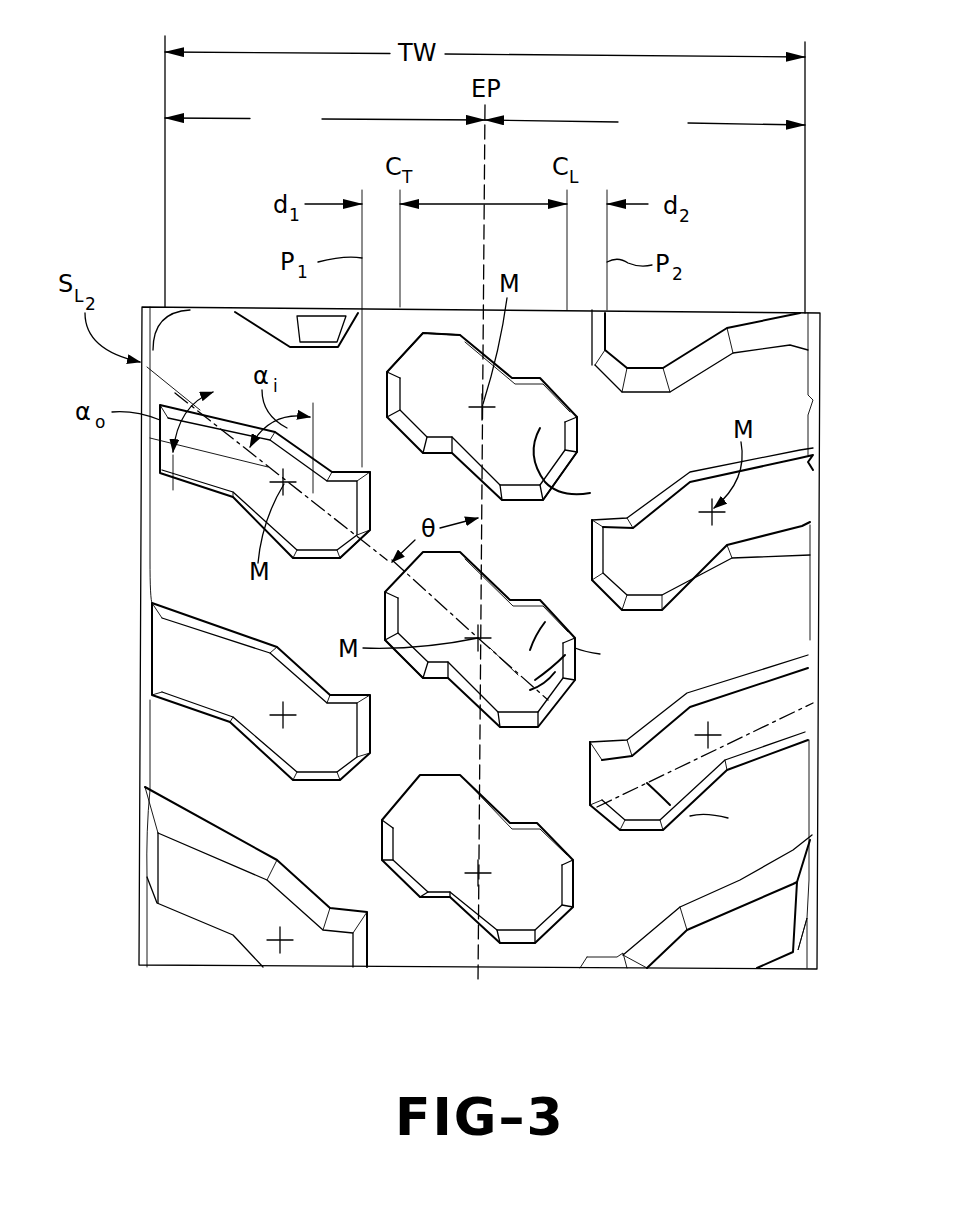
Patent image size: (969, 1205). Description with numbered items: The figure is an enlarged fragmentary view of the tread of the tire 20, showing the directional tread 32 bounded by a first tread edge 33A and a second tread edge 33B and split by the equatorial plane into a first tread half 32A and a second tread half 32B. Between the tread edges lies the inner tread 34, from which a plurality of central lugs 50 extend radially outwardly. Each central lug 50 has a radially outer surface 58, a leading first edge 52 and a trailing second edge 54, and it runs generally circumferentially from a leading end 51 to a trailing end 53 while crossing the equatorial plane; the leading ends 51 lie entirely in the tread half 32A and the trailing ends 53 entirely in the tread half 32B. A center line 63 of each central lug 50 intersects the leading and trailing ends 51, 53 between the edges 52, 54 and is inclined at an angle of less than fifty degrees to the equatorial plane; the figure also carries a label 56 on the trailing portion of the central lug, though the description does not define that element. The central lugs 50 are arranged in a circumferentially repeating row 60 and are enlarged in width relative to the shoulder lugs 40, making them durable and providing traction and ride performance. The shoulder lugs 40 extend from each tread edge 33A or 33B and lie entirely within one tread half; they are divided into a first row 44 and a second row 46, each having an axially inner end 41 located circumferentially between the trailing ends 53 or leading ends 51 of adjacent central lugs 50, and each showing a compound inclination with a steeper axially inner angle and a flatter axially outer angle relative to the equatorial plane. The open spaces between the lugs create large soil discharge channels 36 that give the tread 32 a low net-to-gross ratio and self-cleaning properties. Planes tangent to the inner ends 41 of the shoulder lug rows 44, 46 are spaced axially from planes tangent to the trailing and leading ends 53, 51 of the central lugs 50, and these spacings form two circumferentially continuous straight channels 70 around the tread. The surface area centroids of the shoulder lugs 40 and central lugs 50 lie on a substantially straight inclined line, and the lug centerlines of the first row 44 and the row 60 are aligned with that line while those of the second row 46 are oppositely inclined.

The tire 20 is at (134, 118).
The tread 32 is at (760, 392).
The first tread half 32A is at (325, 120).
The second tread half 32B is at (645, 123).
The first tread edge 33A is at (165, 200).
The second tread edge 33B is at (806, 203).
The inner tread 34 is at (195, 762).
The soil discharge channels 36 is at (190, 595).
The shoulder lugs 40 is at (217, 463).
The axially inner end 41 is at (372, 497).
The first row of shoulder lugs 44 is at (170, 490).
The second row of shoulder lugs 46 is at (780, 700).
The central lugs 50 is at (474, 901).
The leading end 51 is at (566, 433).
The leading first edge 52 is at (460, 680).
The trailing end 53 is at (390, 385).
The trailing second edge 54 is at (505, 600).
The trailing edge 56 is at (577, 467).
The radially outer surface 58 is at (433, 382).
The row of central lugs 60 is at (425, 850).
The center line 63 is at (548, 625).
The circumferentially continuous straight channels 70 is at (388, 348).